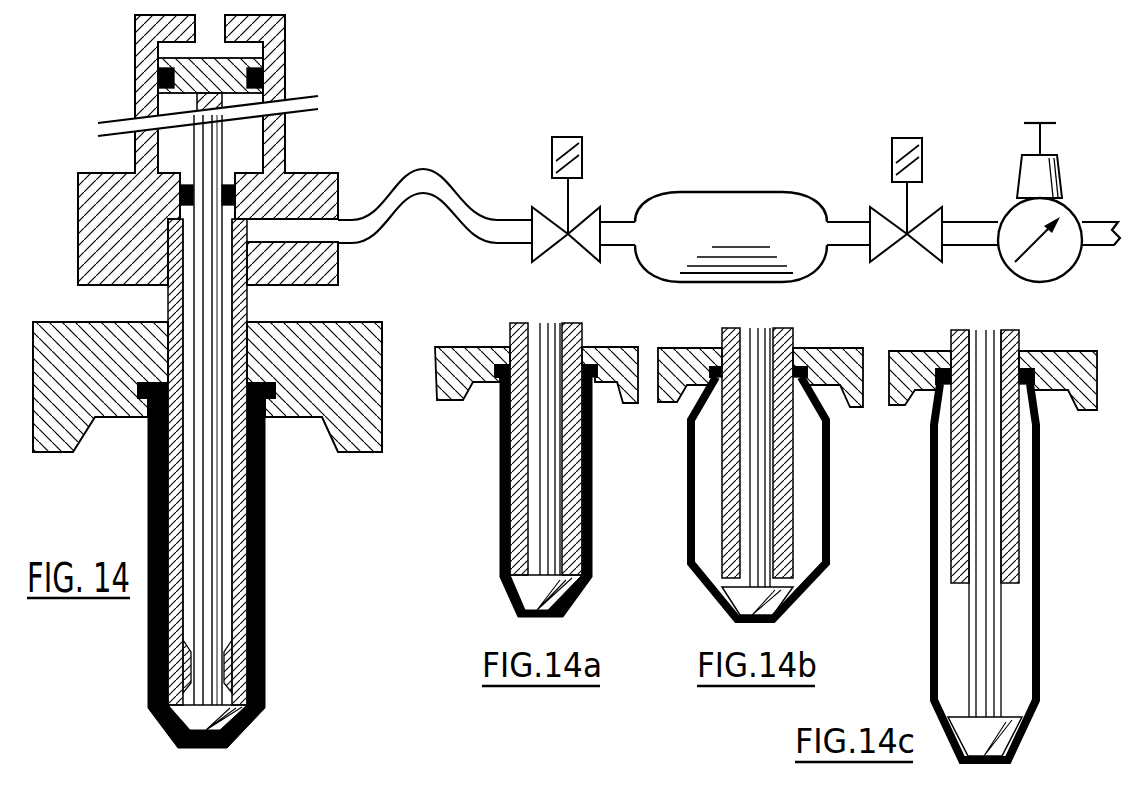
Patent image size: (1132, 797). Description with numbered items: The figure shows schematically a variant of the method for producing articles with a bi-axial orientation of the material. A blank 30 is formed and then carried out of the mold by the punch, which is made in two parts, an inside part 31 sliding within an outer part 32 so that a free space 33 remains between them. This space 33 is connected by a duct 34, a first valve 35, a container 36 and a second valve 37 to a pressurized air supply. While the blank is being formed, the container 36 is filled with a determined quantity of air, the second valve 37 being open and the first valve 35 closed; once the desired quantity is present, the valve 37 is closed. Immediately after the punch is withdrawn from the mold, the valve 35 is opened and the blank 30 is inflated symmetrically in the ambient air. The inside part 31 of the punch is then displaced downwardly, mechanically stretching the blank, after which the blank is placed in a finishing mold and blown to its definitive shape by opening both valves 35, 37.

In FIG. 14, the blank 30 is at (263, 668).
In FIG. 14, the inside part of the punch 31 is at (207, 550).
In FIG. 14A, the inside part of the punch 31 is at (547, 460).
In FIG. 14B, the inside part of the punch 31 is at (760, 462).
In FIG. 14C, the inside part of the punch 31 is at (986, 500).
In FIG. 14, the outer part of the punch 32 is at (240, 605).
In FIG. 14A, the outer part of the punch 32 is at (572, 512).
In FIG. 14B, the outer part of the punch 32 is at (788, 507).
In FIG. 14C, the outer part of the punch 32 is at (1018, 548).
In FIG. 14, the free space 33 is at (228, 497).
In FIG. 14, the duct 34 is at (382, 233).
In FIG. 14, the first valve 35 is at (582, 168).
In FIG. 14, the container 36 is at (710, 210).
In FIG. 14, the second valve 37 is at (922, 172).